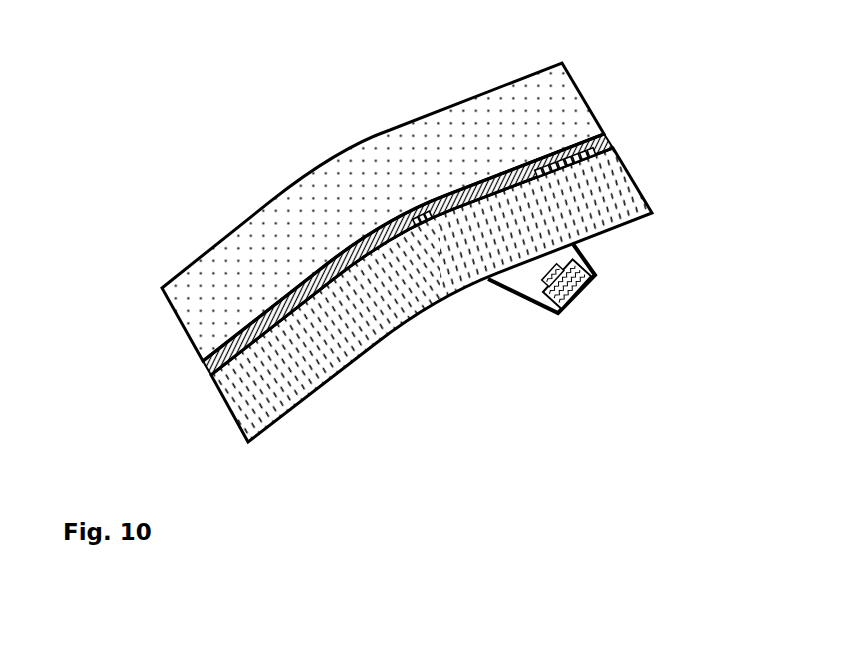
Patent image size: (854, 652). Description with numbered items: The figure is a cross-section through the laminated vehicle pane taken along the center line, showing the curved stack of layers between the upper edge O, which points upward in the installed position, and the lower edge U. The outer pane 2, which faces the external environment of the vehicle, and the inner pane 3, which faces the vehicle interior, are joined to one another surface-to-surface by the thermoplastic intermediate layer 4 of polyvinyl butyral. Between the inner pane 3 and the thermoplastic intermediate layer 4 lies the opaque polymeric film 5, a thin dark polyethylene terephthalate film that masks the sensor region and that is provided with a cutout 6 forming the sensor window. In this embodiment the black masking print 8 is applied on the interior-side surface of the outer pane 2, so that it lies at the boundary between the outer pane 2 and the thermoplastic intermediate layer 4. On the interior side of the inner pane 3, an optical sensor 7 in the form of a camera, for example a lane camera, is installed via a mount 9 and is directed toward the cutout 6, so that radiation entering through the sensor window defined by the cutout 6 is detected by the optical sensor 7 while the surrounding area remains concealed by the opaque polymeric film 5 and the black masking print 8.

The outer pane 2 is at (180, 305).
The inner pane 3 is at (230, 383).
The thermoplastic intermediate layer 4 is at (212, 378).
The opaque polymeric film 5 is at (425, 220).
The cutout 6 is at (515, 185).
The optical sensor 7 is at (557, 313).
The black masking print 8 is at (212, 363).
The mount 9 is at (512, 295).
The upper edge O is at (628, 162).
The lower edge U is at (240, 430).